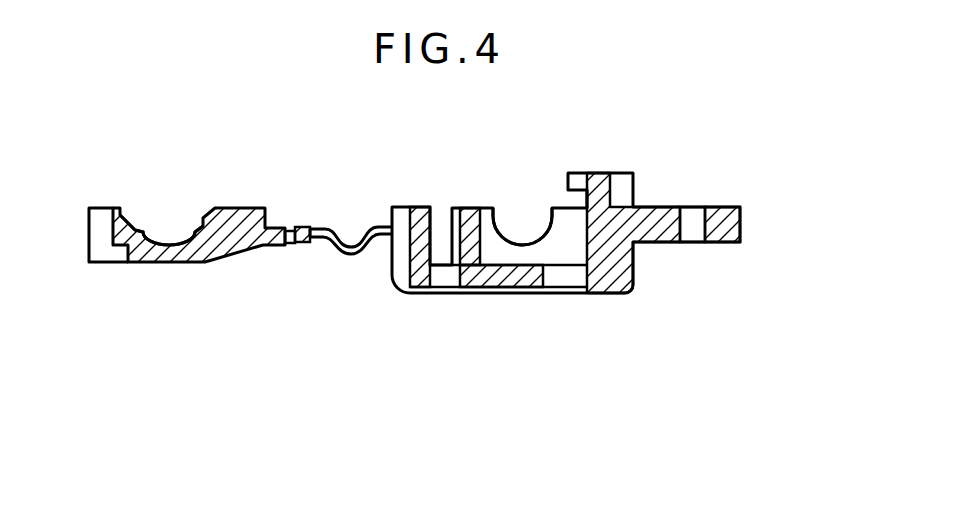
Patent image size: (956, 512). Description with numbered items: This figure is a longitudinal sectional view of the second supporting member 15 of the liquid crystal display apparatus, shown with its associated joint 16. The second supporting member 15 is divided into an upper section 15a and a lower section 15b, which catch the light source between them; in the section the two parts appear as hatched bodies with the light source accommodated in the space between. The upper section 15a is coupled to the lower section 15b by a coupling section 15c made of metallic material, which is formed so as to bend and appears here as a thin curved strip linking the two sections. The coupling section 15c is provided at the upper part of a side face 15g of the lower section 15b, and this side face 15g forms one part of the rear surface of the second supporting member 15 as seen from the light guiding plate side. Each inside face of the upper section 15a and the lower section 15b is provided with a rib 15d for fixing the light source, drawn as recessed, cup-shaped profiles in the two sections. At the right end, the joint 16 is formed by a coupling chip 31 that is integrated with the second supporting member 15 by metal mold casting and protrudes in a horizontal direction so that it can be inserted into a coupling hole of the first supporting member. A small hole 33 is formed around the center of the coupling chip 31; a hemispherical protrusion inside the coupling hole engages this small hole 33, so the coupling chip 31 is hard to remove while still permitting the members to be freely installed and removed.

The second supporting member 15 is at (555, 318).
The upper section 15a is at (162, 263).
The lower section 15b is at (475, 290).
The coupling section 15c is at (336, 252).
The rib 15d is at (136, 233).
The side face 15g is at (384, 280).
The joint 16 is at (747, 136).
The coupling chip 31 is at (718, 222).
The small hole 33 is at (692, 232).